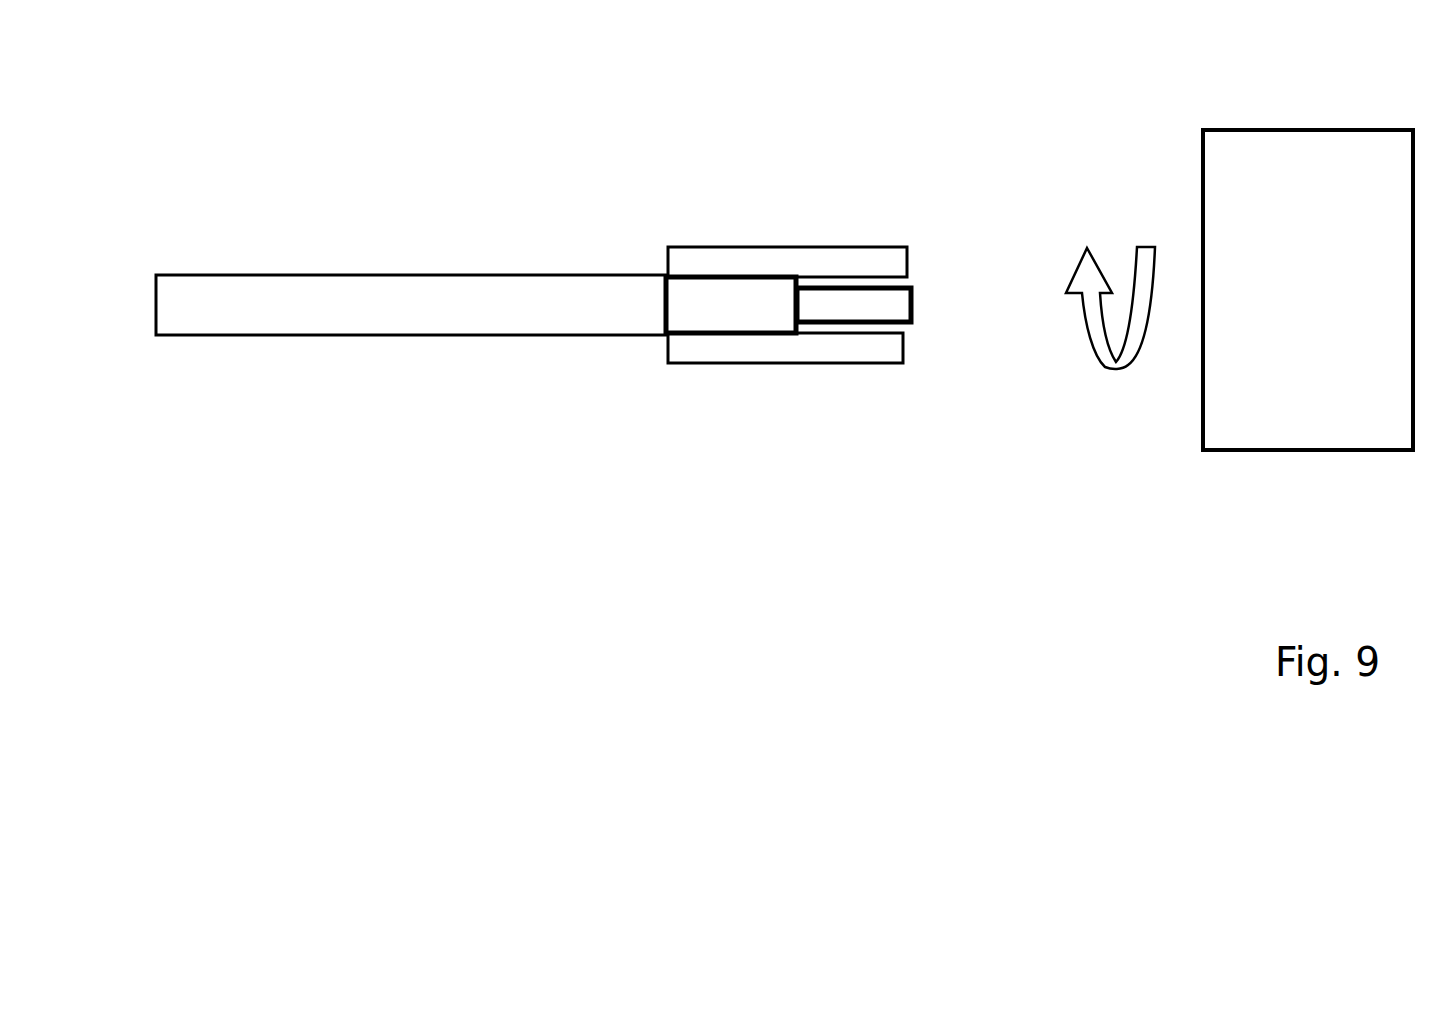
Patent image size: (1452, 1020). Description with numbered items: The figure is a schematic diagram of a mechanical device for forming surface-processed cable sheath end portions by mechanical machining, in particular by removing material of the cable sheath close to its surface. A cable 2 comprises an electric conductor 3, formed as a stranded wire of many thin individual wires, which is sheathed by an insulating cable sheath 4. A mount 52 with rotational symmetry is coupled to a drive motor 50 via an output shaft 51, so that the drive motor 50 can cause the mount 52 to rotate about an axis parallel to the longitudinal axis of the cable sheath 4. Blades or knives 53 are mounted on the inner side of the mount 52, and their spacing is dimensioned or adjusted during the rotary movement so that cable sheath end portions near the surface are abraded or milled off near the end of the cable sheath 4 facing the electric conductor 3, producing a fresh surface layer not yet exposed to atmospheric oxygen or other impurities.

The cable 2 is at (266, 240).
The electric conductor 3 is at (856, 305).
The cable sheath 4 is at (423, 305).
The drive motor 50 is at (1272, 185).
The output shaft 51 is at (1055, 295).
The mount 52 is at (730, 207).
The blades or knives 53 is at (795, 258).